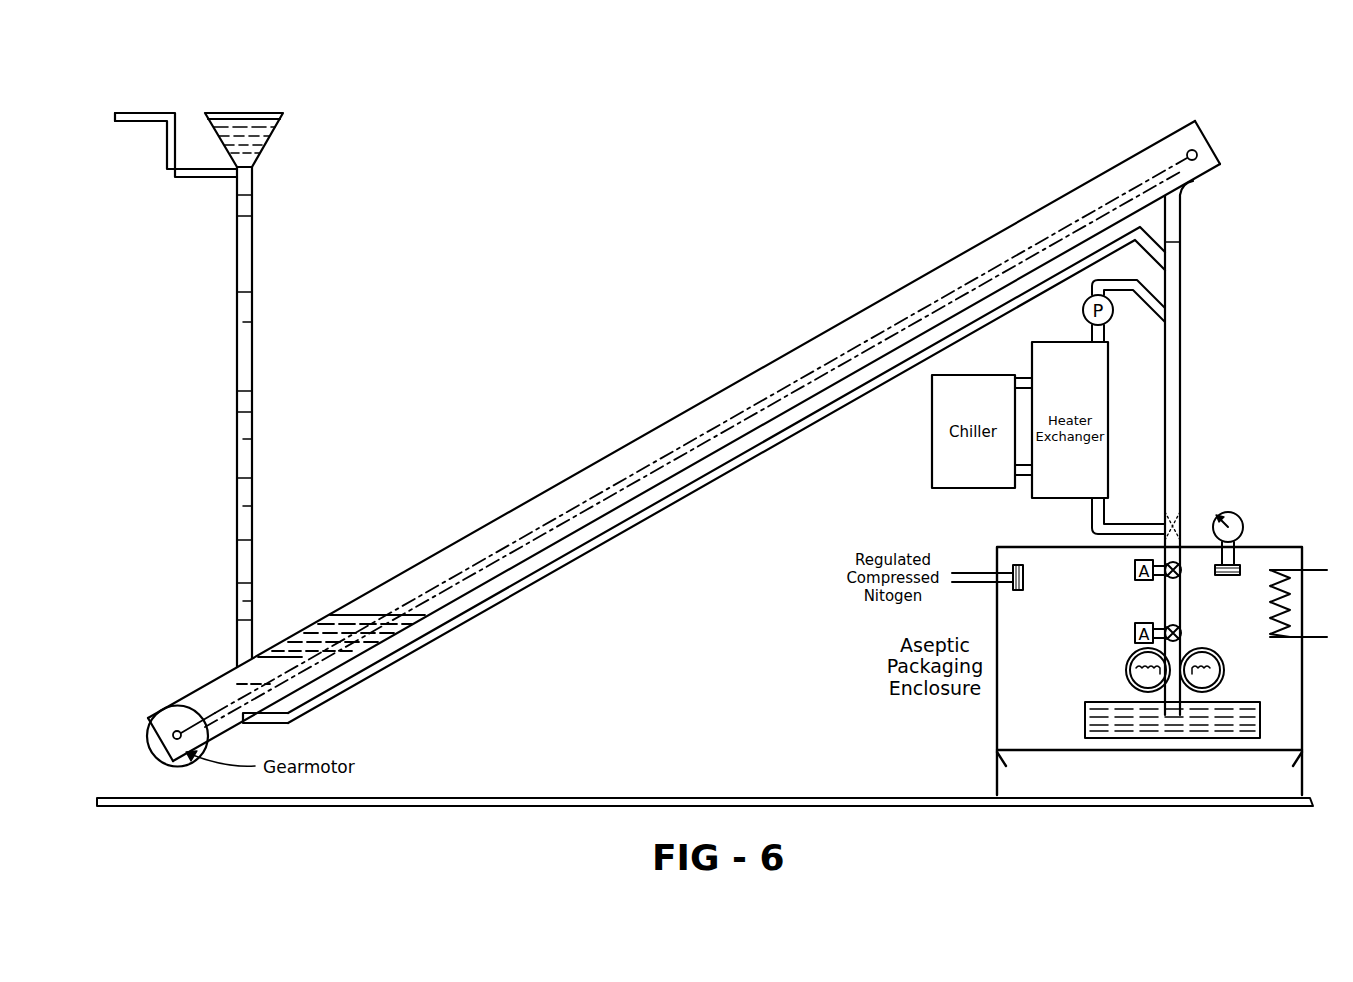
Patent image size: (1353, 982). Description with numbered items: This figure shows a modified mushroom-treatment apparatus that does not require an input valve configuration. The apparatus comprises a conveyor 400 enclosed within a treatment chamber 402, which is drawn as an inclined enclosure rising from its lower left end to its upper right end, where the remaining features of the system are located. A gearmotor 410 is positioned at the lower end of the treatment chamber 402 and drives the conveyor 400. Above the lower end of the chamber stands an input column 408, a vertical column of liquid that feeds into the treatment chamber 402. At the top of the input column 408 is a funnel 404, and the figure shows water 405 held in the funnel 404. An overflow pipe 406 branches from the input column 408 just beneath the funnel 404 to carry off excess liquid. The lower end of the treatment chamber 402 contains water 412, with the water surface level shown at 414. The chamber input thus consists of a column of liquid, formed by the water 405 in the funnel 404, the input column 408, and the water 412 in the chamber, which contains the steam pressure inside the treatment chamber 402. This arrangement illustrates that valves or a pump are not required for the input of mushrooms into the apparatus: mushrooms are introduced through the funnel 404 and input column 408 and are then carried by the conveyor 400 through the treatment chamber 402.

The conveyor 400 is at (576, 505).
The treatment chamber 402 is at (632, 443).
The funnel 404 is at (247, 113).
The water 405 is at (260, 137).
The overflow pipe 406 is at (150, 113).
The input column 408 is at (246, 340).
The gearmotor 410 is at (170, 745).
The water 412 is at (283, 655).
The water surface level 414 is at (390, 616).